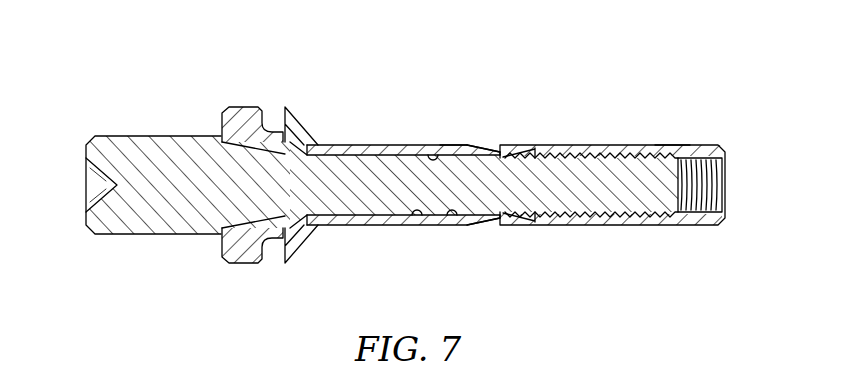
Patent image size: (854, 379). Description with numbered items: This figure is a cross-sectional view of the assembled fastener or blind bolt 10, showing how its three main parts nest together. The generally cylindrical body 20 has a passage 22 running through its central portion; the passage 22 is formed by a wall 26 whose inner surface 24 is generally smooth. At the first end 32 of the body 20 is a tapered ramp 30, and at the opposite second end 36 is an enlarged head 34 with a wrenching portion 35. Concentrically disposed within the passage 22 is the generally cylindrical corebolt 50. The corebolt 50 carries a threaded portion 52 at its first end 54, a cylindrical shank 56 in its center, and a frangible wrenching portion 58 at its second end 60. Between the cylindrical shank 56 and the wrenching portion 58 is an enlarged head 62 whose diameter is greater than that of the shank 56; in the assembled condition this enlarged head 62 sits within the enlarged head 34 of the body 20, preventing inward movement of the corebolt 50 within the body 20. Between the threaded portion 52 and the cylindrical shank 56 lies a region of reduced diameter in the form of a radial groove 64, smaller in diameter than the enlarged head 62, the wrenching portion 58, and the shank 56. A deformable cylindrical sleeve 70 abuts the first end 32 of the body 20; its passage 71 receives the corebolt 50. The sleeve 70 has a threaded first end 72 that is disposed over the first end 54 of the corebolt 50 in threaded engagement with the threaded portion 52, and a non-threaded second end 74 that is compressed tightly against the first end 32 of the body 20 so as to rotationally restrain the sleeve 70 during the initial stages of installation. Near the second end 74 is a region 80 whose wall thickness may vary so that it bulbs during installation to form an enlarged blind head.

The blind bolt 10 is at (93, 79).
The body 20 is at (400, 145).
The passage 22 is at (451, 145).
The inner surface 24 is at (462, 214).
The wall 26 is at (415, 202).
The tapered ramp 30 is at (484, 149).
The first end 32 is at (457, 146).
The enlarged head 34 is at (289, 109).
The wrenching portion 35 is at (245, 107).
The second end 36 is at (307, 133).
The corebolt 50 is at (340, 170).
The threaded portion 52 is at (596, 152).
The first end 54 is at (665, 152).
The cylindrical shank 56 is at (378, 207).
The frangible wrenching portion 58 is at (135, 145).
The second end 60 is at (187, 141).
The enlarged head 62 is at (297, 205).
The radial groove 64 is at (485, 217).
The cylindrical sleeve 70 is at (653, 219).
The passage 71 is at (628, 152).
The first end 72 is at (693, 145).
The second end 74 is at (522, 150).
The region 80 is at (533, 214).